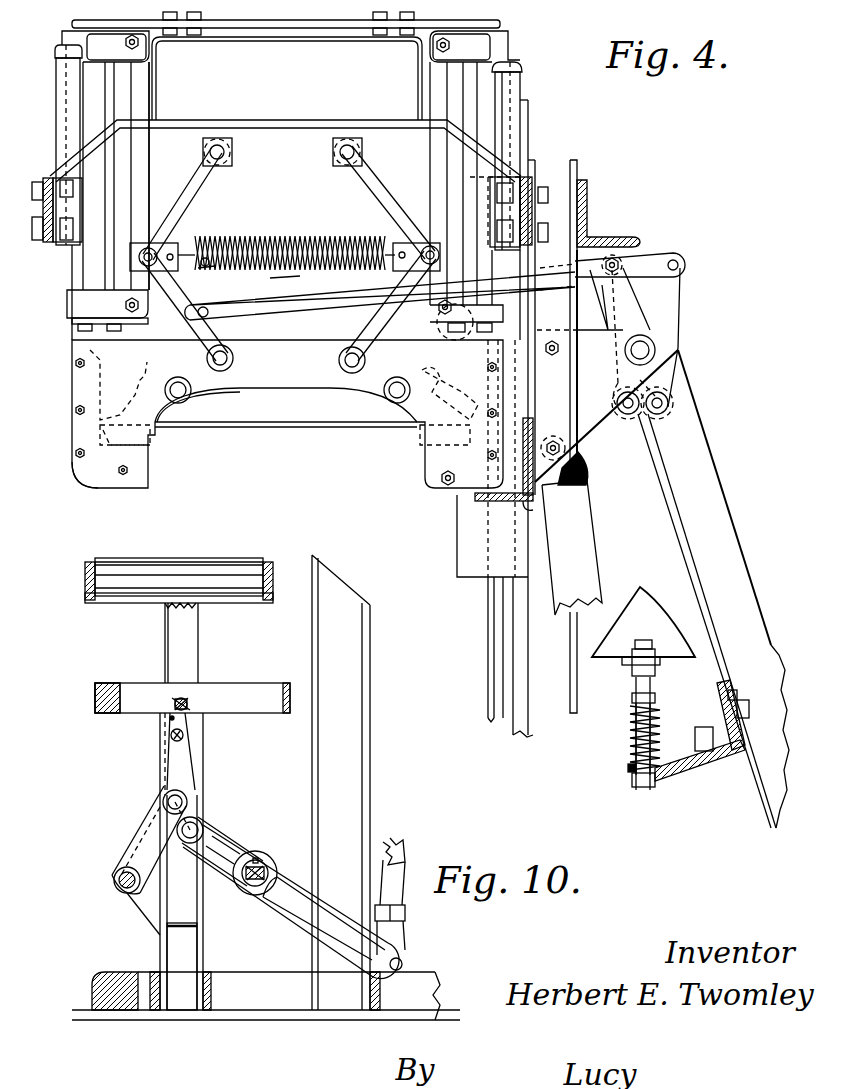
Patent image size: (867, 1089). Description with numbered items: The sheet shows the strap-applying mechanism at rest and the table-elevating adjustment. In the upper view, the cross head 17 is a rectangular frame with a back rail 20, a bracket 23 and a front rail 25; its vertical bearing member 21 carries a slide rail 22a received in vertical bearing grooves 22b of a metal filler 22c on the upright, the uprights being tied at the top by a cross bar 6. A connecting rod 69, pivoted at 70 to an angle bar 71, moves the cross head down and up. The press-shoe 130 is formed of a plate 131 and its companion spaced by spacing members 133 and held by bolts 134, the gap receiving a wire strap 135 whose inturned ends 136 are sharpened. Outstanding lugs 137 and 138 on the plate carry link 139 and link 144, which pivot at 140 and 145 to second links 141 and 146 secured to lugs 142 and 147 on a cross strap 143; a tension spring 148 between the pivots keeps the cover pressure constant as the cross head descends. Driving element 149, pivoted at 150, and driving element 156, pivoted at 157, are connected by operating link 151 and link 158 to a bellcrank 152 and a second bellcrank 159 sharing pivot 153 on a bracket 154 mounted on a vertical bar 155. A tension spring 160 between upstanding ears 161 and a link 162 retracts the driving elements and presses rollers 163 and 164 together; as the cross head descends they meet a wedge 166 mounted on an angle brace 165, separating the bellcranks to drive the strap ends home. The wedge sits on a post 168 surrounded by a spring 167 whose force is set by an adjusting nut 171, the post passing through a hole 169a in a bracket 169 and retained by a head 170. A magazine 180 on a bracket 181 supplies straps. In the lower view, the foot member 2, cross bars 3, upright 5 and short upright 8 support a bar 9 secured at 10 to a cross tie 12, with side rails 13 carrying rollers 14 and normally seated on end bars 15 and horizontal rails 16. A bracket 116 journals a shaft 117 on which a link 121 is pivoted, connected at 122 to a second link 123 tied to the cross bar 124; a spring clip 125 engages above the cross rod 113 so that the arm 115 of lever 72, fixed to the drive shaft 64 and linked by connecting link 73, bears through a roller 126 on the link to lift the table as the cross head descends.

In FIG. 4, the magazine 180 is at (250, 38).
In FIG. 4, the cross strap 143 is at (275, 120).
In FIG. 4, the cross head 17 is at (46, 170).
In FIG. 4, the front rail 25 is at (42, 212).
In FIG. 4, the bracket 23 is at (455, 182).
In FIG. 4, the downwardly depending lug 142 is at (228, 156).
In FIG. 4, the downwardly extending lug 147 is at (338, 142).
In FIG. 4, the second link 141 is at (205, 186).
In FIG. 4, the second link 146 is at (385, 177).
In FIG. 4, the pivot 140 is at (145, 258).
In FIG. 4, the link 162 is at (395, 237).
In FIG. 4, the tension spring 160 is at (380, 232).
In FIG. 4, the tension spring 148 is at (205, 250).
In FIG. 4, the upstanding ears 161 is at (222, 264).
In FIG. 4, the operating link 151 is at (290, 286).
In FIG. 4, the link 139 is at (218, 327).
In FIG. 4, the outstanding lug 137 is at (233, 358).
In FIG. 4, the link 144 is at (360, 338).
In FIG. 4, the outstanding lug 138 is at (340, 358).
In FIG. 4, the pivot 145 is at (430, 270).
In FIG. 4, the link 158 is at (475, 337).
In FIG. 4, the bracket 181 is at (75, 327).
In FIG. 4, the driving element 149 is at (80, 384).
In FIG. 4, the inturned ends 136 is at (100, 436).
In FIG. 4, the spacing members 133 is at (138, 455).
In FIG. 4, the bolts 134 is at (80, 462).
In FIG. 4, the plate 131 is at (330, 384).
In FIG. 4, the press-shoe 130 is at (277, 387).
In FIG. 4, the wire strap 135 is at (238, 424).
In FIG. 4, the pivot 150 is at (180, 395).
In FIG. 4, the pivot 157 is at (392, 398).
In FIG. 4, the driving element 156 is at (455, 412).
In FIG. 4, the back rail 20 is at (578, 167).
In FIG. 4, the cross bar 6 is at (586, 212).
In FIG. 4, the second bellcrank 159 is at (635, 298).
In FIG. 4, the bellcrank 152 is at (670, 308).
In FIG. 4, the pivot 153 is at (650, 350).
In FIG. 4, the vertical bar 155 is at (575, 358).
In FIG. 4, the roller 164 is at (626, 416).
In FIG. 4, the roller 163 is at (658, 415).
In FIG. 4, the angle brace 165 is at (703, 484).
In FIG. 4, the bracket 154 is at (593, 432).
In FIG. 4, the pivot 70 is at (572, 480).
In FIG. 4, the angle bar 71 is at (538, 512).
In FIG. 4, the connecting rod 69 is at (585, 533).
In FIG. 4, the vertical bearing member 21 is at (460, 544).
In FIG. 4, the slide rail 22a is at (522, 638).
In FIG. 4, the vertical bearing grooves 22b is at (520, 698).
In FIG. 4, the metal filler 22c is at (505, 672).
In FIG. 4, the wedge 166 is at (635, 600).
In FIG. 4, the adjusting nut 171 is at (658, 701).
In FIG. 4, the spring 167 is at (634, 718).
In FIG. 4, the post 168 is at (640, 752).
In FIG. 4, the hole 169a is at (630, 768).
In FIG. 4, the head 170 is at (633, 784).
In FIG. 4, the bracket 169 is at (680, 772).
In FIG. 10, the rollers 14 is at (188, 566).
In FIG. 10, the side rails 13 is at (85, 584).
In FIG. 10, the cross tie 12 is at (112, 600).
In FIG. 10, the securing point 10 is at (166, 607).
In FIG. 10, the bar 9 is at (188, 650).
In FIG. 10, the horizontal rails 16 is at (115, 683).
In FIG. 10, the end bars 15 is at (95, 698).
In FIG. 10, the spring clip 125 is at (198, 700).
In FIG. 10, the cross bar or rod 113 is at (170, 719).
In FIG. 10, the cross bar 124 is at (170, 740).
In FIG. 10, the second link 123 is at (185, 757).
In FIG. 10, the pivot 122 is at (186, 798).
In FIG. 10, the arm 115 is at (218, 836).
In FIG. 10, the link 121 is at (142, 827).
In FIG. 10, the roller 126 is at (182, 846).
In FIG. 10, the shaft 117 is at (114, 876).
In FIG. 10, the bracket 116 is at (135, 902).
In FIG. 10, the drive shaft 64 is at (248, 882).
In FIG. 10, the lever 72 is at (290, 938).
In FIG. 10, the upright 8 is at (160, 940).
In FIG. 10, the upright 5 is at (363, 764).
In FIG. 10, the connecting link 73 is at (396, 862).
In FIG. 10, the cross bars 3 is at (125, 992).
In FIG. 10, the foot member 2 is at (256, 1005).